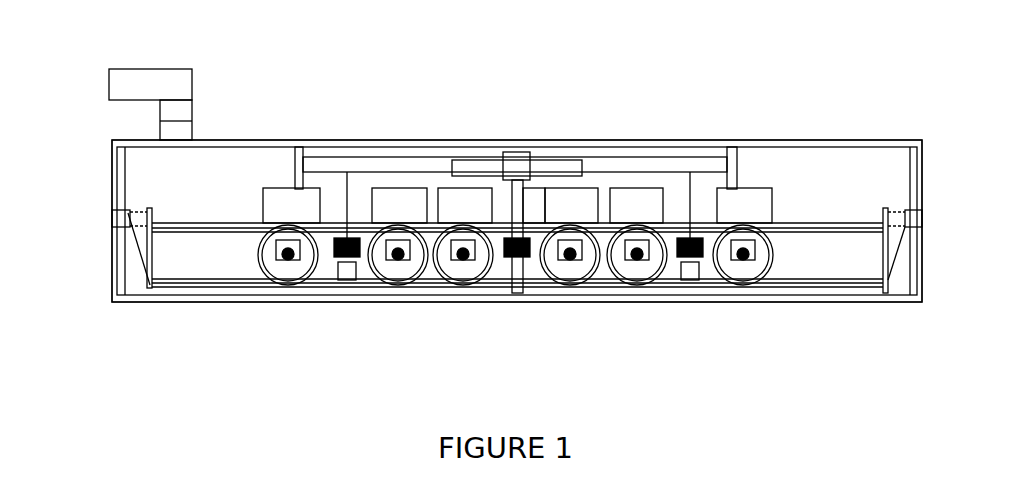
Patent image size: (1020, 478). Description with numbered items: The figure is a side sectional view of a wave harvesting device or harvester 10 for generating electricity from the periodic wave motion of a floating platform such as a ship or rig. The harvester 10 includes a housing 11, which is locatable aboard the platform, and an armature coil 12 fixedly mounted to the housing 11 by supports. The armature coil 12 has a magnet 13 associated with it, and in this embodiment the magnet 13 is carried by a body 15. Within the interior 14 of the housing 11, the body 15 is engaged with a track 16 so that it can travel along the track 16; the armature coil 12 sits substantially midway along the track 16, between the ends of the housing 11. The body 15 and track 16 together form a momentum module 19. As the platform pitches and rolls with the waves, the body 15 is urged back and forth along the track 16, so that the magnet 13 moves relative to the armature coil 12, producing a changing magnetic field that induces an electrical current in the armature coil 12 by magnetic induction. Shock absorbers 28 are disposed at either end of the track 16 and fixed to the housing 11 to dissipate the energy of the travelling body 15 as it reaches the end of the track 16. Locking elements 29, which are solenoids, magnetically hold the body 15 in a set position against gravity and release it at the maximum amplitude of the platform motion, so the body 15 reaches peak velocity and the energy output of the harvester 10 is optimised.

The wave harvesting device 10 is at (775, 65).
The housing 11 is at (228, 299).
The armature coil 12 is at (500, 157).
The magnet 13 is at (668, 163).
The interior 14 is at (840, 262).
The body 15 is at (362, 208).
The track 16 is at (538, 283).
The momentum module 19 is at (233, 365).
The shock absorbers 28 is at (128, 222).
The locking elements 29 is at (690, 270).